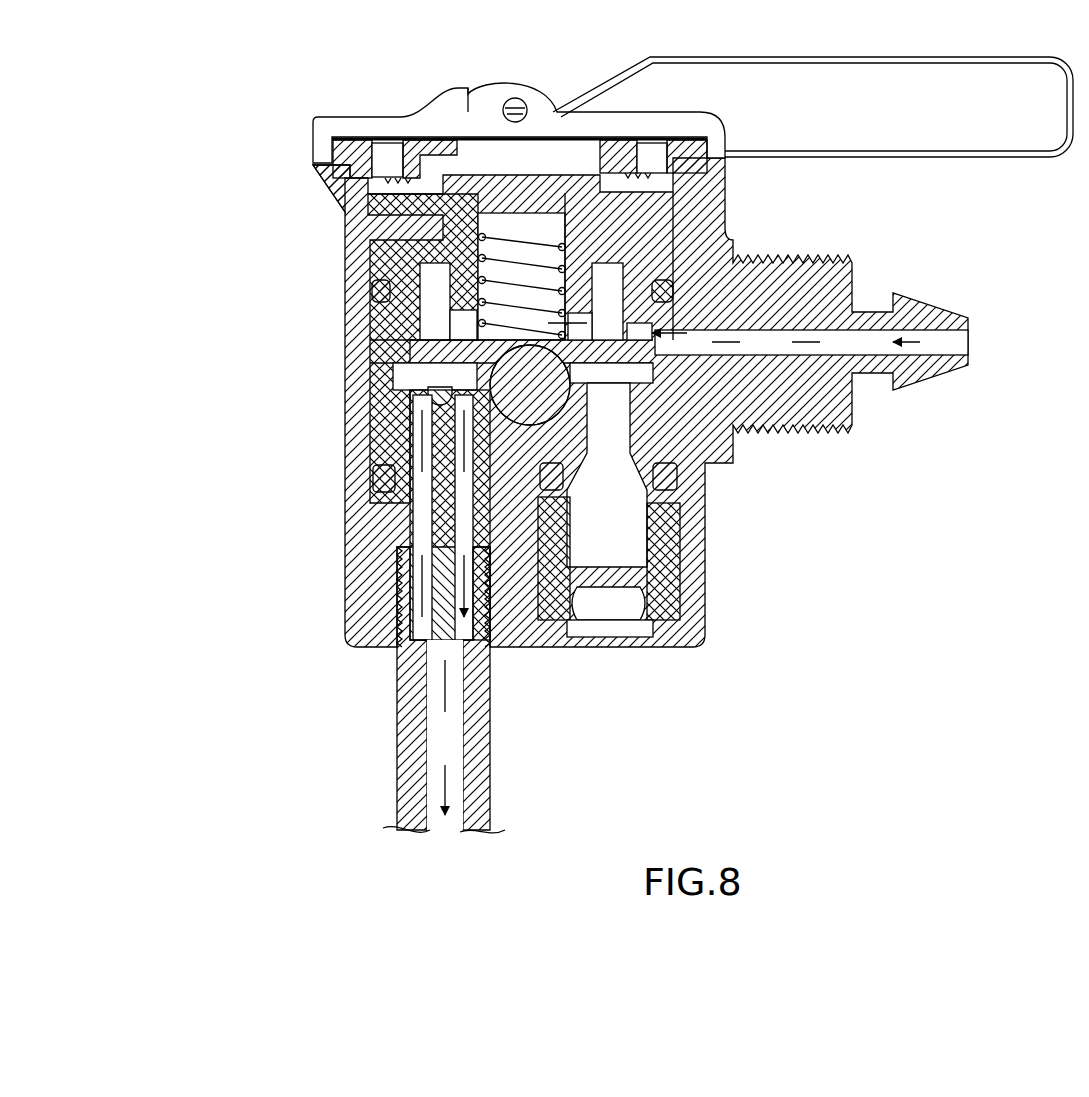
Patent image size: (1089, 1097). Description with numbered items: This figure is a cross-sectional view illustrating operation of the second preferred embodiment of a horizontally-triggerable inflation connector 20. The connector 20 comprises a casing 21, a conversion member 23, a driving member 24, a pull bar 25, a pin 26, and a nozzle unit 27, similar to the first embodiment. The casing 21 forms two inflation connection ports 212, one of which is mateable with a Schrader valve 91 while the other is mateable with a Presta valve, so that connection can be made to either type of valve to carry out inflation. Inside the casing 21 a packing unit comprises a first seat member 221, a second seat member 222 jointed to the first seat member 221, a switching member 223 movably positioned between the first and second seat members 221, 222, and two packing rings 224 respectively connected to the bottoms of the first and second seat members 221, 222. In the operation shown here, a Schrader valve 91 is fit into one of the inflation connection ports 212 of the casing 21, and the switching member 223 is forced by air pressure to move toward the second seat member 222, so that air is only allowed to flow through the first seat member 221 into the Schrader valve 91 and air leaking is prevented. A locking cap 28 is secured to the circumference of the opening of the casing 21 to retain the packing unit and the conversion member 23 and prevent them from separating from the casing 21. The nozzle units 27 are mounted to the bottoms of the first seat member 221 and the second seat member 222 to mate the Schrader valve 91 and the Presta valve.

The horizontally-triggerable inflation connector 20 is at (205, 197).
The casing 21 is at (795, 262).
The conversion member 23 is at (345, 258).
The driving member 24 is at (473, 130).
The pull bar 25 is at (1005, 135).
The pin 26 is at (513, 100).
The nozzle unit 27 is at (447, 503).
The locking cap 28 is at (313, 173).
The Schrader valve 91 is at (403, 740).
The inflation connection port 212 is at (492, 648).
The first seat member 221 is at (345, 355).
The second seat member 222 is at (663, 415).
The switching member 223 is at (500, 388).
The packing ring 224 is at (393, 573).